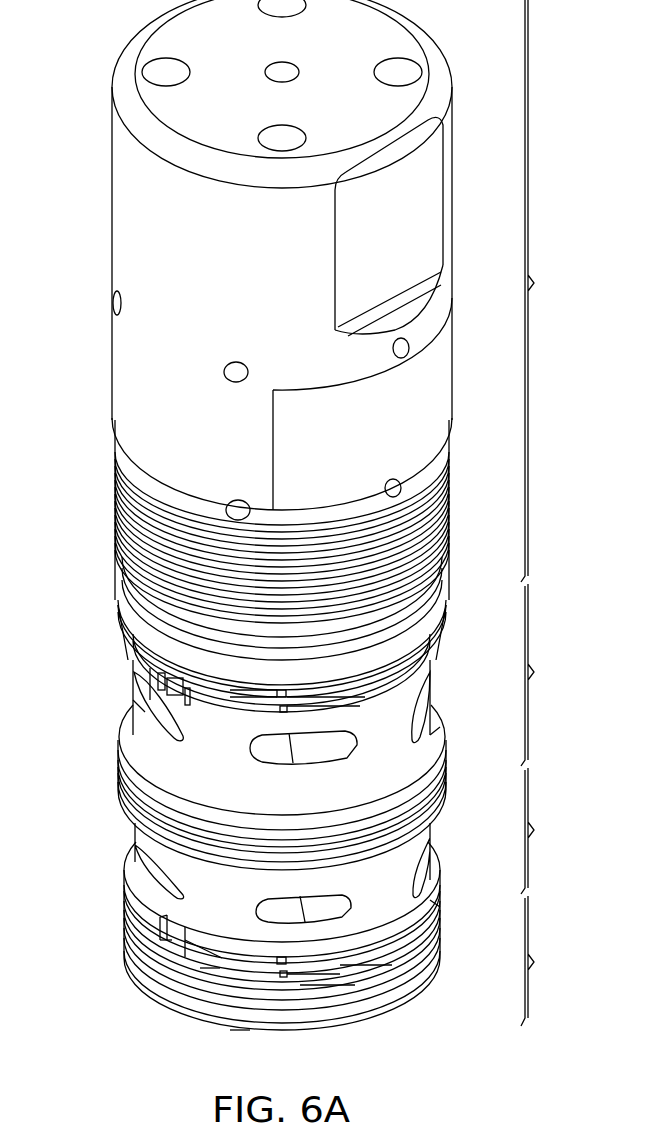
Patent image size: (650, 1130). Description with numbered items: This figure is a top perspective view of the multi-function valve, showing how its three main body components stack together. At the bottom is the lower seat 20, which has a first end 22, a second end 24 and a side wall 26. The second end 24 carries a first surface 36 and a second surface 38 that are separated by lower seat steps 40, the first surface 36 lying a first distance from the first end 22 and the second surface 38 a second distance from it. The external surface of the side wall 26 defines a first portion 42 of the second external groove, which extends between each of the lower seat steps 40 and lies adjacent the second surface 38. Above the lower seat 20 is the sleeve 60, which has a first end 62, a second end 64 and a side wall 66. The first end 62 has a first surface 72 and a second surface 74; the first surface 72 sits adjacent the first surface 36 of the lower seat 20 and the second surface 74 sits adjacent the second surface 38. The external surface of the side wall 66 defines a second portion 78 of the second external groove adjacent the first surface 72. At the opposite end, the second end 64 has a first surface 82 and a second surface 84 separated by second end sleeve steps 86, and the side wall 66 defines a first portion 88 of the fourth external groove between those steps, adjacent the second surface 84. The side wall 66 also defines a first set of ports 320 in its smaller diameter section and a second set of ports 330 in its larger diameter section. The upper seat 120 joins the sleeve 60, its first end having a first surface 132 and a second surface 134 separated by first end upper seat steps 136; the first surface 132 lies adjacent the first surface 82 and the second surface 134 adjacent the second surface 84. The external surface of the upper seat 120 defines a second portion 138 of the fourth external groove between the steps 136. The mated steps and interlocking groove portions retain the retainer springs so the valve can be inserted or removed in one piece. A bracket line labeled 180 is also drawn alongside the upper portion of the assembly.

The upper body 180 is at (346, 513).
The upper seat 120 is at (349, 646).
The sleeve 60 is at (342, 787).
The lower seat 20 is at (345, 936).
The first set of ports 320 is at (135, 707).
The second set of ports 330 is at (140, 870).
The second portion of fourth external groove 138 is at (140, 673).
The second surface 134 is at (117, 720).
The second end 64 is at (222, 710).
The second surface 84 is at (243, 690).
The first surface 132 is at (330, 687).
The first surface 82 is at (365, 700).
The second end sleeve steps 86 is at (268, 702).
The first portion of fourth external groove 88 is at (440, 727).
The first end upper seat steps 136 is at (287, 748).
The second surface 38 is at (393, 943).
The first surface 72 is at (170, 963).
The first end 62 is at (222, 958).
The side wall 66 is at (440, 907).
The lower seat steps 40 is at (282, 988).
The second end 24 is at (308, 970).
The second surface 74 is at (333, 967).
The side wall 26 is at (353, 987).
The second portion of second external groove 78 is at (390, 967).
The first surface 36 is at (168, 933).
The first portion of second external groove 42 is at (217, 970).
The first end 22 is at (240, 1035).